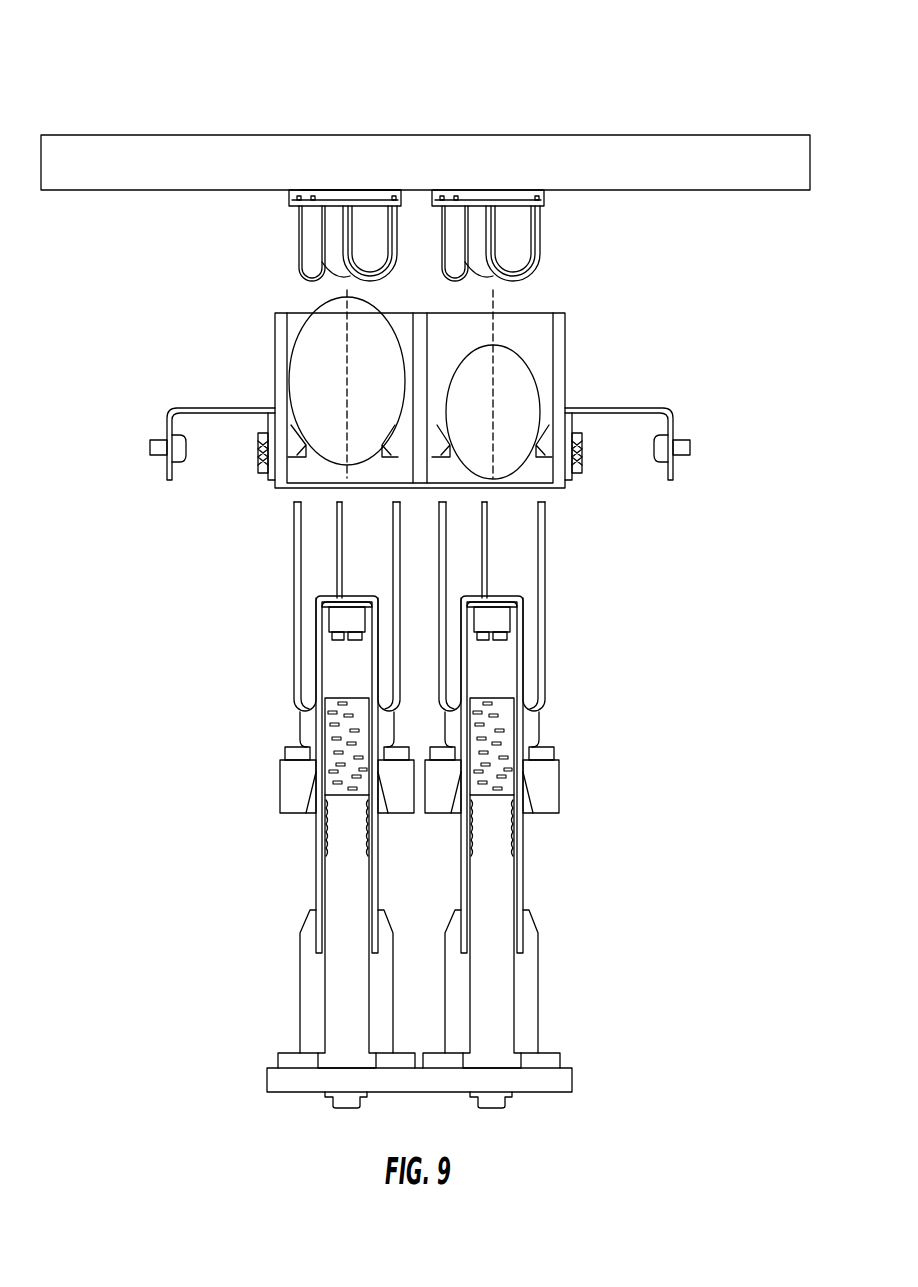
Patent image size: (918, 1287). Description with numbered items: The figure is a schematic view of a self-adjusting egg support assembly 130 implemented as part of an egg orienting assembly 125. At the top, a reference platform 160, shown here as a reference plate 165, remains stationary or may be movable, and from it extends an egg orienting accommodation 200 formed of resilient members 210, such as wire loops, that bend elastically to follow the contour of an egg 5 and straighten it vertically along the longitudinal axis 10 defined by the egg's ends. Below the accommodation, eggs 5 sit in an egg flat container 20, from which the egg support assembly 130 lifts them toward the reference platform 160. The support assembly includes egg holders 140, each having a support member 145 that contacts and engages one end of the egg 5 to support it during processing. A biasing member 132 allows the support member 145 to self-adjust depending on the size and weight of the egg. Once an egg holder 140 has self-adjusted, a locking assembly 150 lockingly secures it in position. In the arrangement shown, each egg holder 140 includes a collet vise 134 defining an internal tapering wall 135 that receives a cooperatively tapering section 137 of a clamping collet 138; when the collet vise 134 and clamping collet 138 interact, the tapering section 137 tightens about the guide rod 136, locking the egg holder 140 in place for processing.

The egg 5 is at (313, 380).
The longitudinal axis 10 is at (343, 358).
The egg flat container 20 is at (562, 337).
The egg orienting assembly 125 is at (737, 86).
The egg support assembly 130 is at (383, 903).
The biasing member 132 is at (355, 720).
The collet vise 134 is at (293, 784).
The internal tapering wall 135 is at (314, 813).
The guide rod 136 is at (492, 890).
The tapering section 137 is at (303, 916).
The clamping collet 138 is at (523, 995).
The egg holder 140 is at (410, 729).
The support member 145 is at (337, 617).
The locking assembly 150 is at (412, 903).
The reference platform 160 is at (562, 163).
The reference plate 165 is at (344, 150).
The egg orienting accommodation 200 is at (550, 260).
The resilient members 210 is at (297, 250).